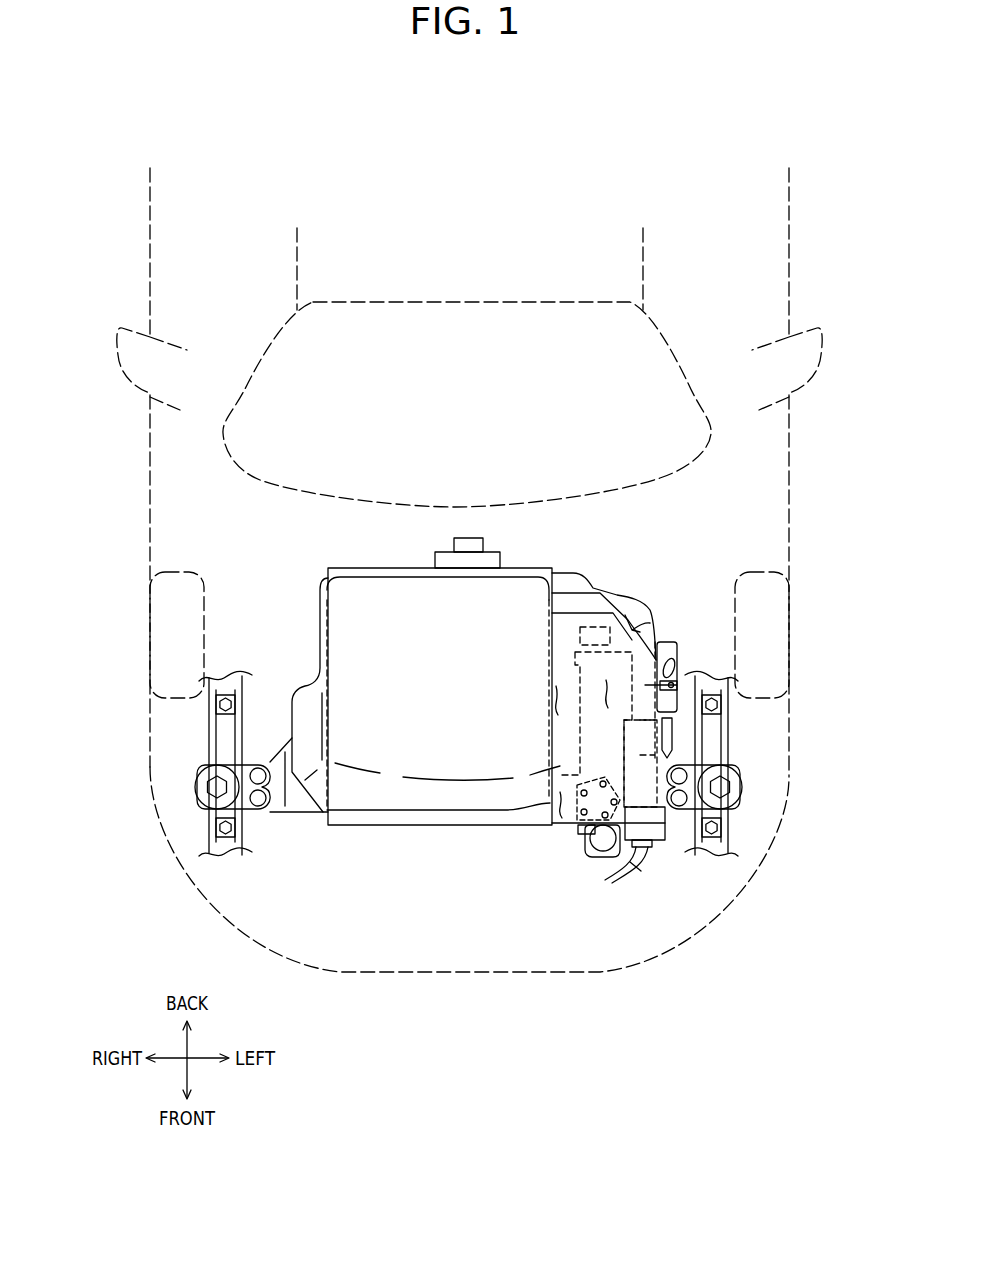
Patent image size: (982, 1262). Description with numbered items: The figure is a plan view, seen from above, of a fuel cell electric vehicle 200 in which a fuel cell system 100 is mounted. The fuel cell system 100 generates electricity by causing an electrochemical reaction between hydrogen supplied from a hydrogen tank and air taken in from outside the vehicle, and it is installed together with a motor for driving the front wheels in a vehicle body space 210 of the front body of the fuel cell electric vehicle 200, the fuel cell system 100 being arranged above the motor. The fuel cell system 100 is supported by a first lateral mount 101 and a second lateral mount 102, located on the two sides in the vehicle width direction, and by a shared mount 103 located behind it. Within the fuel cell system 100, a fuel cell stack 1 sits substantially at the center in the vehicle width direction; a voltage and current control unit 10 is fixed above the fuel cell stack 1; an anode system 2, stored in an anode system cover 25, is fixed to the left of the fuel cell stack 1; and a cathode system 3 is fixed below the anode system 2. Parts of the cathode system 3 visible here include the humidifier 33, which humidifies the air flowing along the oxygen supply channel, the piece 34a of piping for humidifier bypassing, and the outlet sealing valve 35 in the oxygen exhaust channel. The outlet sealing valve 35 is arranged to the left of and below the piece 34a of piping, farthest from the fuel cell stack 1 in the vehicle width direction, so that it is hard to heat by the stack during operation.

The fuel cell stack 1 is at (372, 824).
The voltage and current control unit 10 is at (452, 796).
The anode system 2 is at (601, 833).
The anode system cover 25 is at (567, 823).
The cathode system 3 is at (653, 862).
The humidifier 33 is at (600, 680).
The piece of piping for humidifier bypassing 34a is at (623, 602).
The outlet sealing valve 35 is at (667, 640).
The fuel cell system 100 is at (443, 710).
The first lateral mount 101 is at (745, 773).
The second lateral mount 102 is at (192, 772).
The shared mount 103 is at (468, 532).
The fuel cell electric vehicle 200 is at (148, 478).
The vehicle body space 210 is at (422, 918).